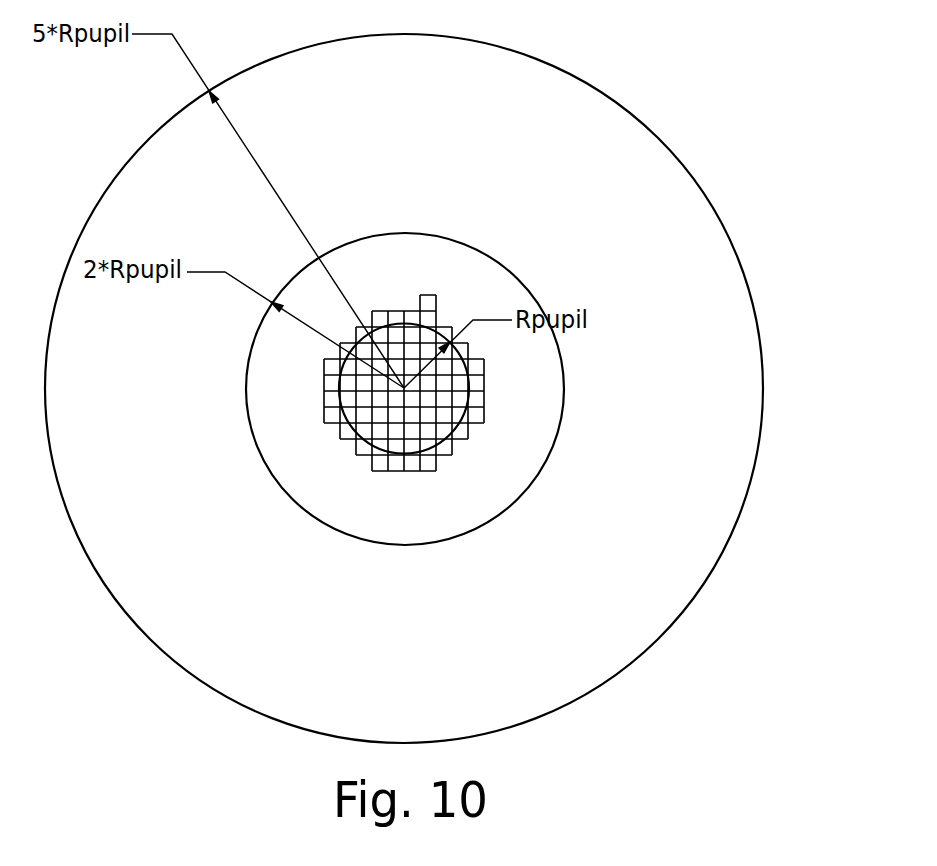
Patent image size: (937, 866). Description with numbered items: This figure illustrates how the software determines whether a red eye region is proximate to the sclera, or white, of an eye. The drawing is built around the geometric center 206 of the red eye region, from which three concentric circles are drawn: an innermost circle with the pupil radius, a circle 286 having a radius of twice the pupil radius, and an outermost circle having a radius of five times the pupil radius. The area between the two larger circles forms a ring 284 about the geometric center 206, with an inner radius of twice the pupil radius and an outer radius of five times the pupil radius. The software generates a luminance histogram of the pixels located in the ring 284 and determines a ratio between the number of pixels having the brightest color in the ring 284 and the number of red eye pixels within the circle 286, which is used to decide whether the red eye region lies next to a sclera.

The geometric center 206 is at (404, 388).
The ring 284 is at (643, 527).
The circle 286 is at (533, 398).